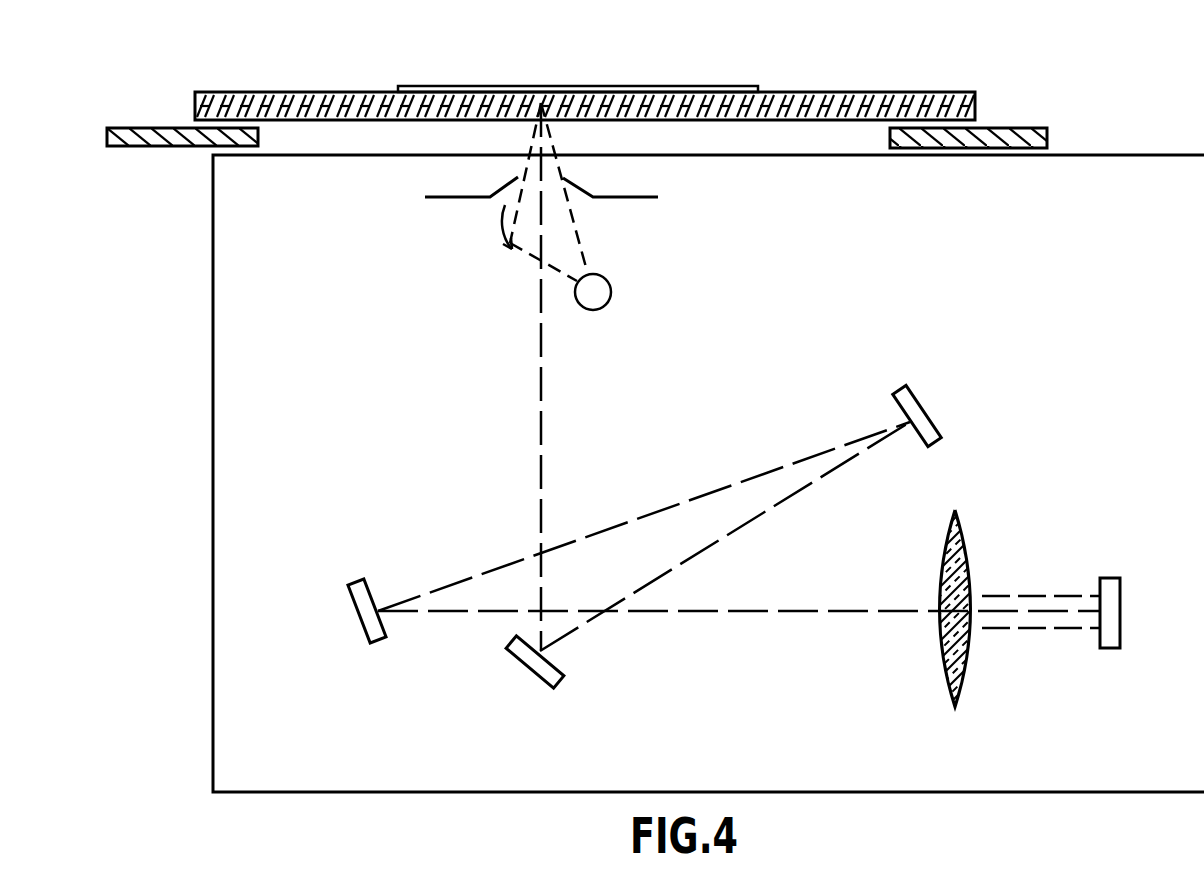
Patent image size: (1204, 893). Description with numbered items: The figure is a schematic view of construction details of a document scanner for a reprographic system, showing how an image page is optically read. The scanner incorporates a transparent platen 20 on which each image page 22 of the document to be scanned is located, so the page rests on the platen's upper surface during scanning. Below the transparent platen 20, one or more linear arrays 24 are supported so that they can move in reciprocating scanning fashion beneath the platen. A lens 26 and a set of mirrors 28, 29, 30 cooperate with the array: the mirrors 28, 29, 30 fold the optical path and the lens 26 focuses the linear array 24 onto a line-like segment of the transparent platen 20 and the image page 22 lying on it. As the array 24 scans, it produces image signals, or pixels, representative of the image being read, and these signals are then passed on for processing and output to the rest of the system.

The transparent platen 20 is at (442, 121).
The image page 22 is at (625, 87).
The linear array 24 is at (1121, 612).
The lens 26 is at (975, 672).
The mirror 28 is at (527, 670).
The mirror 29 is at (920, 399).
The mirror 30 is at (352, 612).